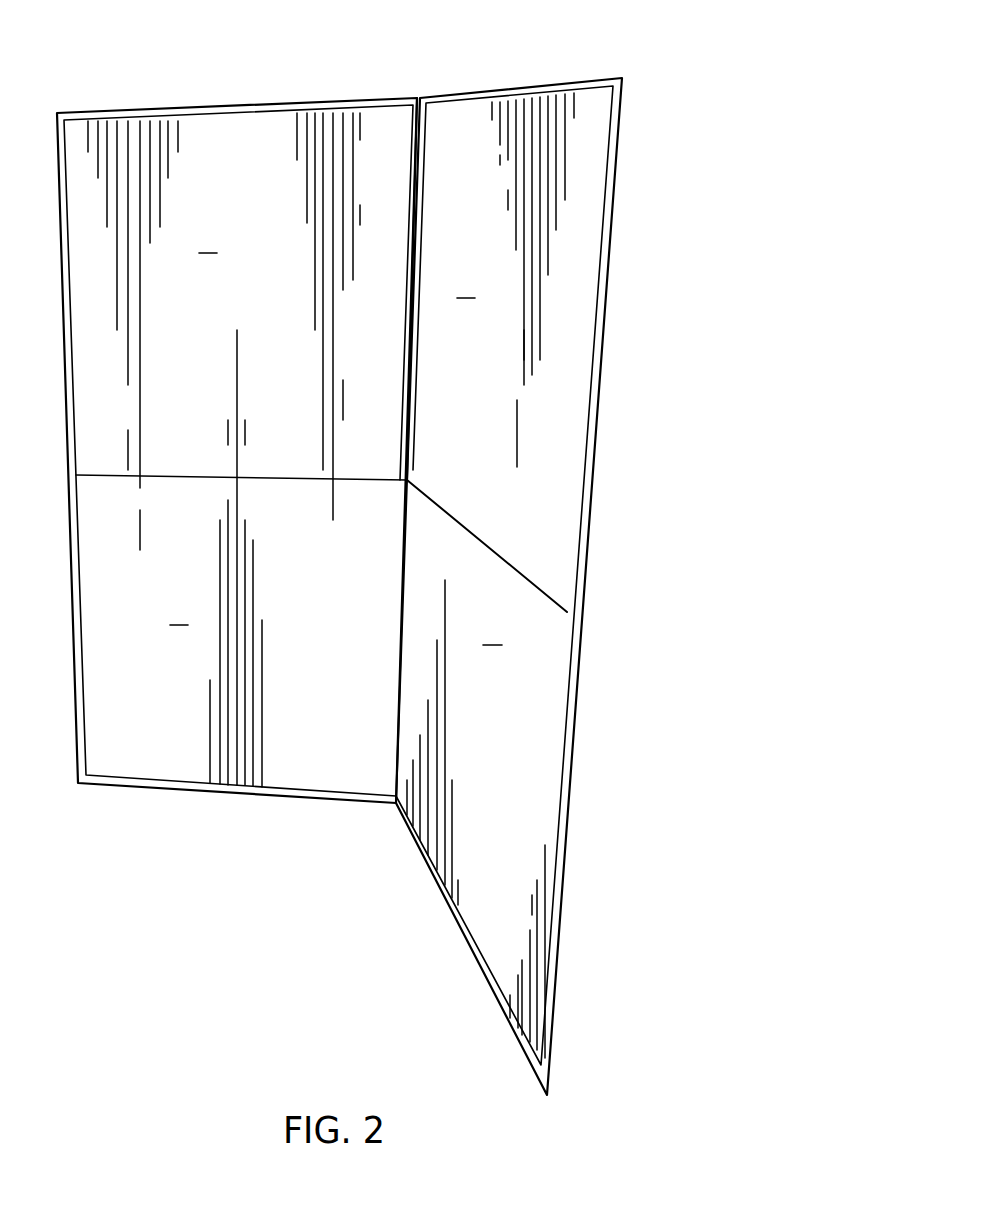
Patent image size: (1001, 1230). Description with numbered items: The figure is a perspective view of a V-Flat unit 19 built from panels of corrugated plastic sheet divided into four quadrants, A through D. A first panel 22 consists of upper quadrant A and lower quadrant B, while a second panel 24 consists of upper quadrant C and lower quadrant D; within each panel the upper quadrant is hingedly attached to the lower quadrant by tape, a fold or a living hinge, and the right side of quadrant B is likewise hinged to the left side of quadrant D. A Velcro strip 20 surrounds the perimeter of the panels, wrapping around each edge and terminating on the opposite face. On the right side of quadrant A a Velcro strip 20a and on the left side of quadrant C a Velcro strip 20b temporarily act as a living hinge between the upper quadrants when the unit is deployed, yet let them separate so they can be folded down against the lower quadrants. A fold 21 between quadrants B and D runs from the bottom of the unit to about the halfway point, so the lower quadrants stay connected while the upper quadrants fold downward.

The V-Flat unit 19 is at (419, 552).
The Velcro strip 20 is at (381, 552).
The Velcro strip 20a is at (413, 138).
The Velcro strip 20b is at (412, 467).
The fold 21 is at (400, 663).
The first panel 22 is at (230, 148).
The second panel 24 is at (582, 113).